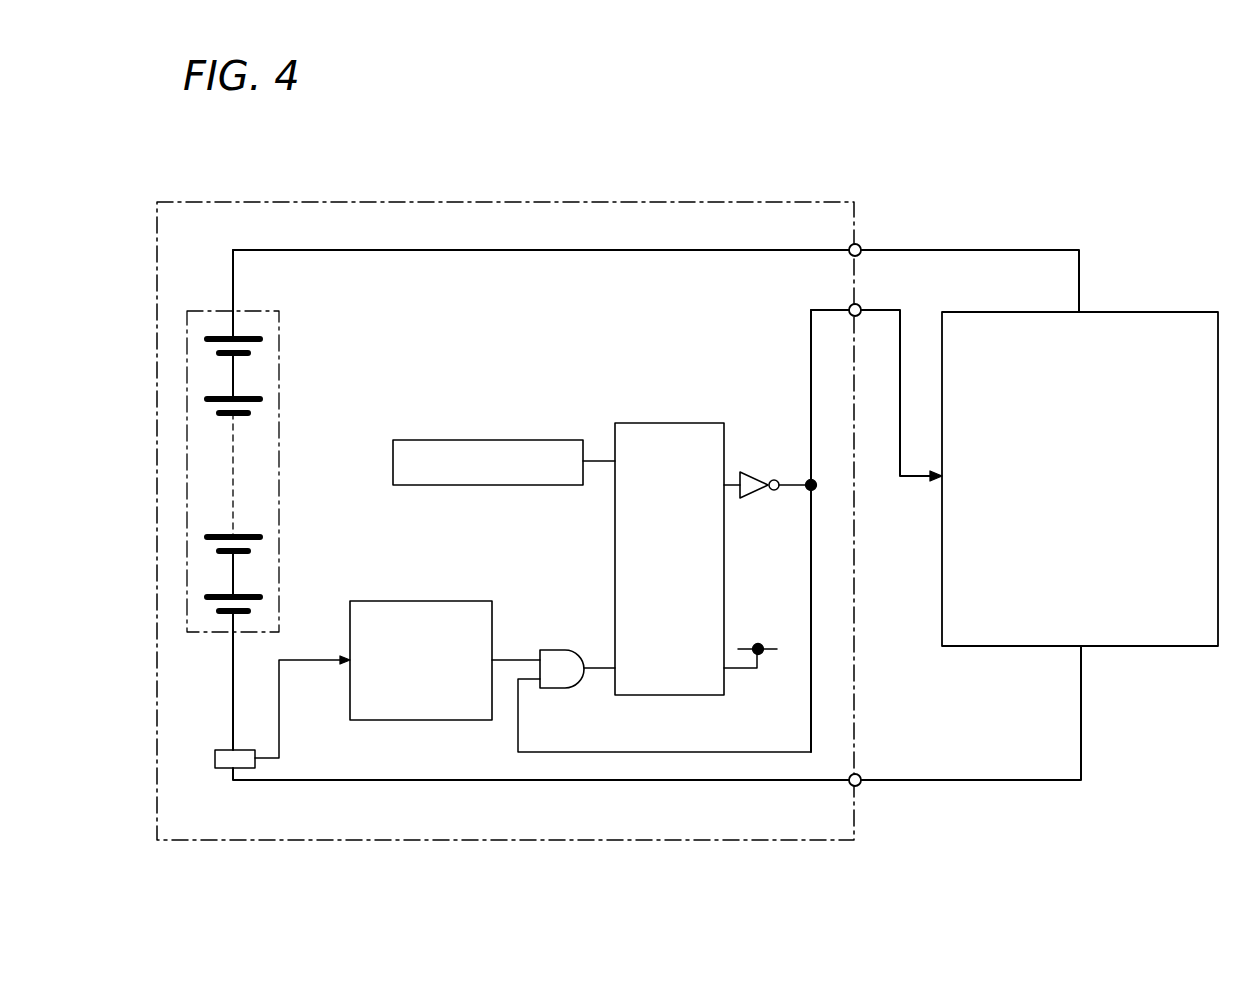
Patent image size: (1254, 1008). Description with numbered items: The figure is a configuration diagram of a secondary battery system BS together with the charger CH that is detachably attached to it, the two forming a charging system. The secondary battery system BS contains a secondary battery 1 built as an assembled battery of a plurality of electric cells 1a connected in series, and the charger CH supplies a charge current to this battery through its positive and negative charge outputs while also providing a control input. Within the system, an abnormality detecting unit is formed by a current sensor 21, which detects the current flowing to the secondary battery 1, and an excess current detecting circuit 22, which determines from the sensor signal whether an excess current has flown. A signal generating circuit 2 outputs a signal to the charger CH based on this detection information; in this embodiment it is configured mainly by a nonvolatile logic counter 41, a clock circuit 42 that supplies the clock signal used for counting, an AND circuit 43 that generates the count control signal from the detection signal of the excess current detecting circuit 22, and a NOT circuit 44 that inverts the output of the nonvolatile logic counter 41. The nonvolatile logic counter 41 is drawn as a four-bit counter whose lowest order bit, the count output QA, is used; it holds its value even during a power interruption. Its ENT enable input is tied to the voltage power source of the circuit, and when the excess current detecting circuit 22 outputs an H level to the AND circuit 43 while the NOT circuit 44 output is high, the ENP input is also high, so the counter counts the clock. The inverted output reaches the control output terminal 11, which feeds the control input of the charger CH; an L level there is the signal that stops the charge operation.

The secondary battery system BS is at (402, 202).
The charger CH is at (1138, 312).
The secondary battery 1 is at (278, 471).
The electric cell 1a is at (248, 353).
The signal generating circuit 2 is at (583, 405).
The control output terminal 11 is at (848, 306).
The current sensor 21 is at (220, 770).
The excess current detecting circuit 22 is at (420, 601).
The nonvolatile logic counter 41 is at (650, 423).
The clock circuit 42 is at (485, 440).
The AND circuit 43 is at (550, 650).
The NOT circuit 44 is at (752, 472).